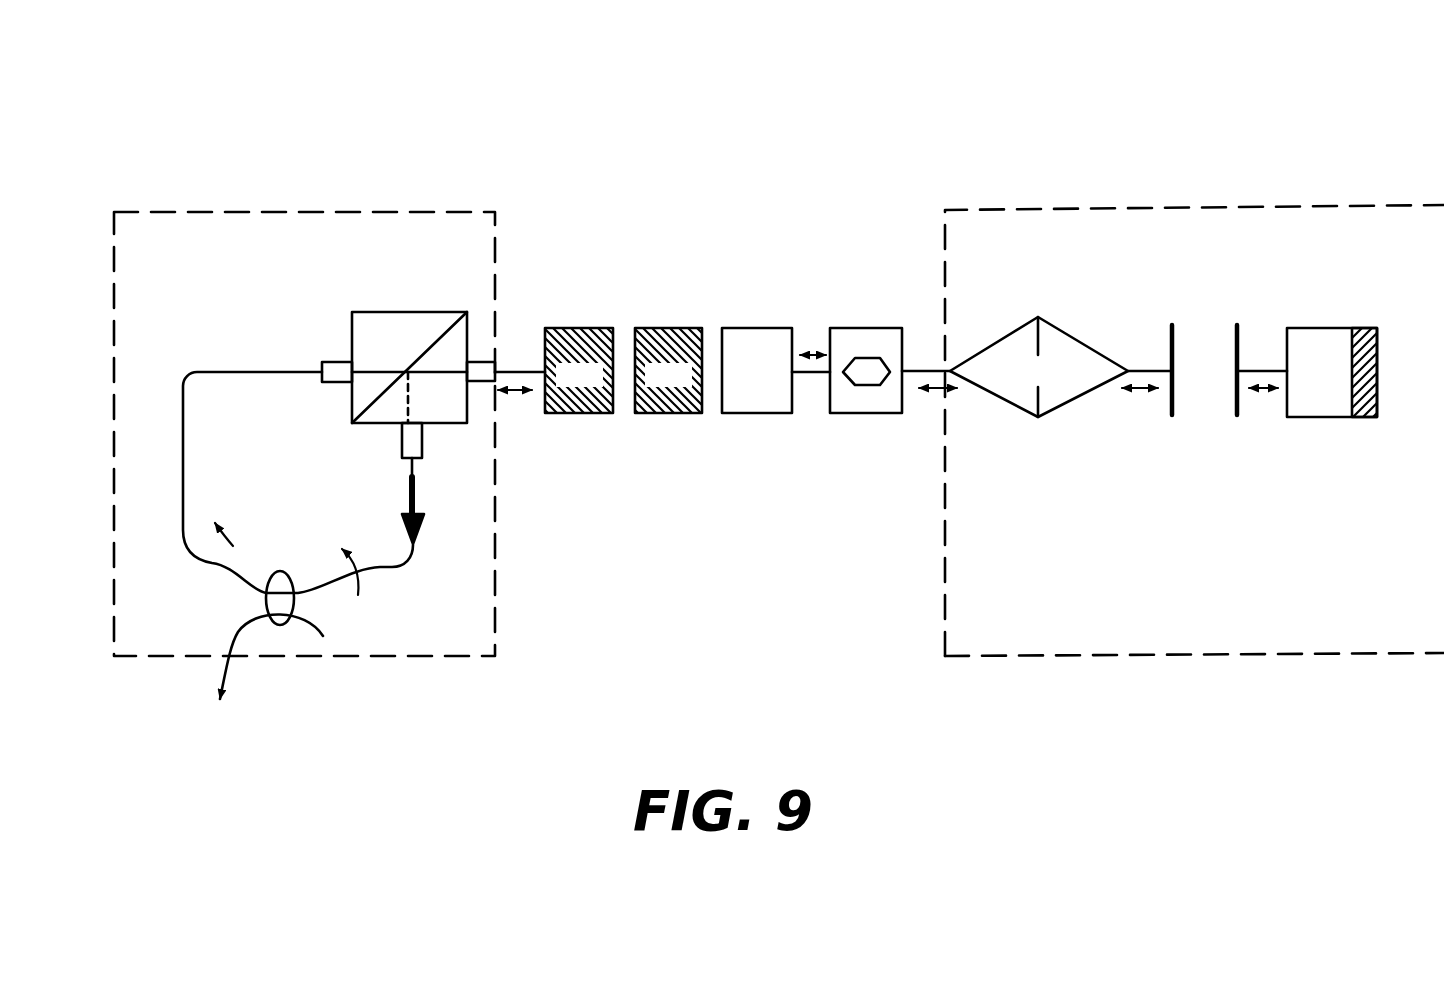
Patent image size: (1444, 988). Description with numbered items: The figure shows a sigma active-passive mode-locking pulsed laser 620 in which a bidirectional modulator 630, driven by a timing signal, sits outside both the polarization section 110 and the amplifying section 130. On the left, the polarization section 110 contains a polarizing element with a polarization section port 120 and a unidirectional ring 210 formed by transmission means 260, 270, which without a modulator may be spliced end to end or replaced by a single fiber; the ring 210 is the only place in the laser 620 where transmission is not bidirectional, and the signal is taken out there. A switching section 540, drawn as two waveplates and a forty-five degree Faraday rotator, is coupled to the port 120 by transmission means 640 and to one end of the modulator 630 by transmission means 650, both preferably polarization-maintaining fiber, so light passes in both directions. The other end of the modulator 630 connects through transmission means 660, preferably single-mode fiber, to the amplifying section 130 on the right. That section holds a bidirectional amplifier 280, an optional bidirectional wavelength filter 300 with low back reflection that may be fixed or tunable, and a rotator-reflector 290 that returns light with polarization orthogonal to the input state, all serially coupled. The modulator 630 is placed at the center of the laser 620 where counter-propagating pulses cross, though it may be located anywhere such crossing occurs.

The polarization section 110 is at (240, 237).
The polarization section port 120 is at (481, 362).
The amplifying section 130 is at (1103, 242).
The unidirectional ring 210 is at (333, 518).
The transmission means 260 is at (185, 392).
The transmission means 270 is at (242, 590).
The bidirectional amplifier 280 is at (1005, 402).
The rotator-reflector 290 is at (1327, 398).
The bidirectional wavelength filter 300 is at (1207, 405).
The switching section 540 is at (680, 358).
The sigma active-passive mode-locking pulsed laser 620 is at (688, 126).
The bidirectional modulator 630 is at (858, 336).
The transmission means 640 is at (516, 370).
The transmission means 650 is at (816, 374).
The transmission means 660 is at (918, 370).